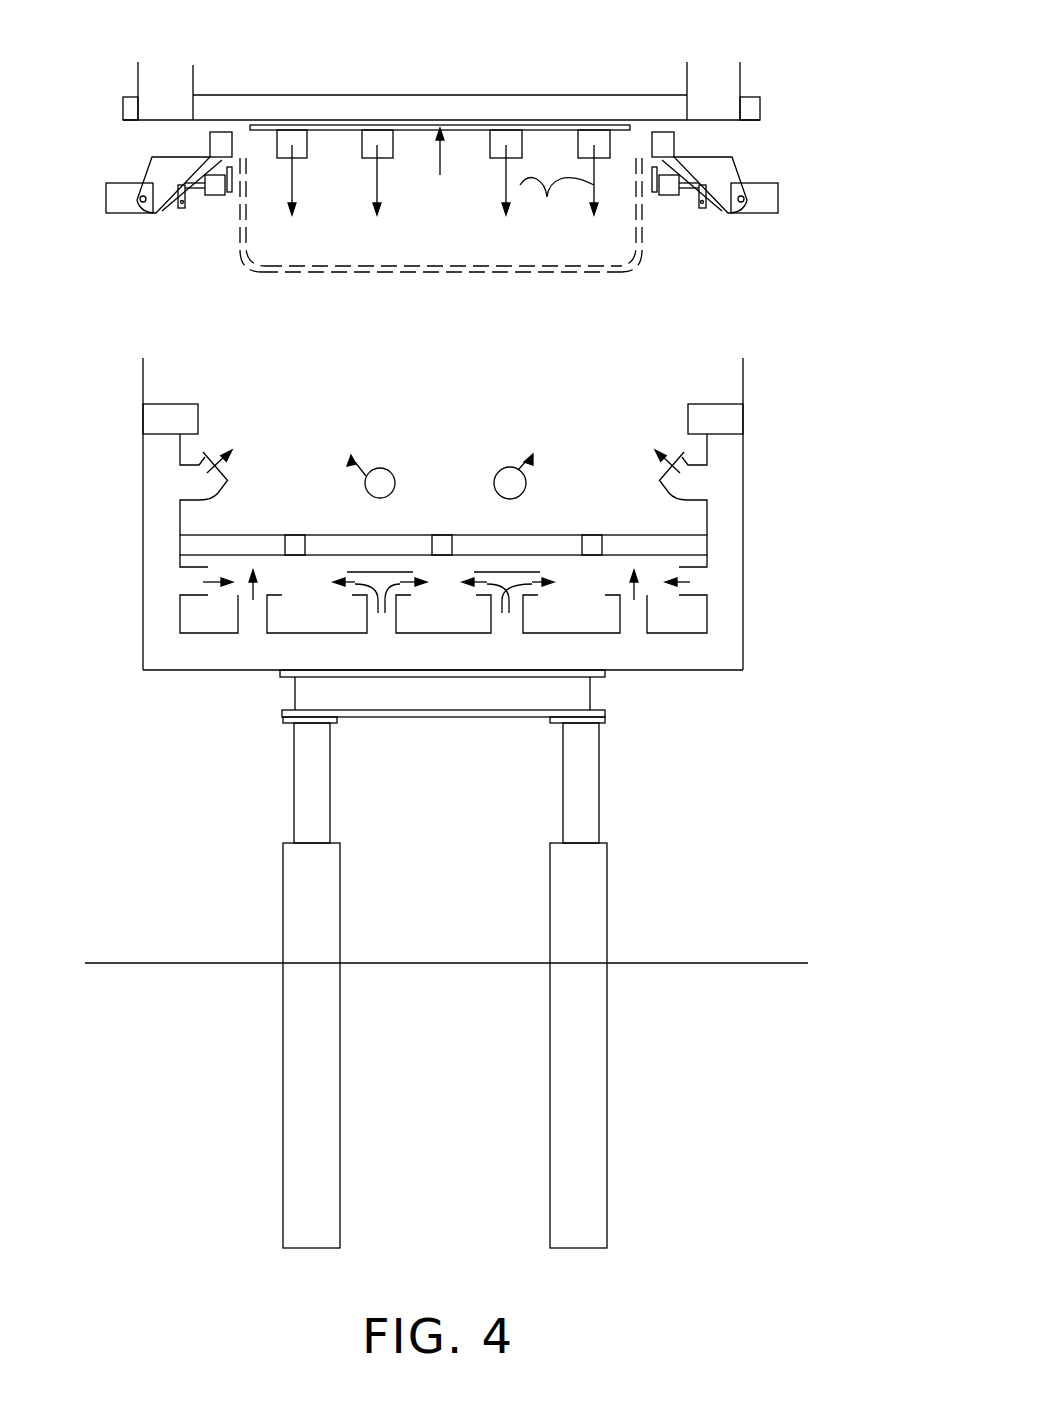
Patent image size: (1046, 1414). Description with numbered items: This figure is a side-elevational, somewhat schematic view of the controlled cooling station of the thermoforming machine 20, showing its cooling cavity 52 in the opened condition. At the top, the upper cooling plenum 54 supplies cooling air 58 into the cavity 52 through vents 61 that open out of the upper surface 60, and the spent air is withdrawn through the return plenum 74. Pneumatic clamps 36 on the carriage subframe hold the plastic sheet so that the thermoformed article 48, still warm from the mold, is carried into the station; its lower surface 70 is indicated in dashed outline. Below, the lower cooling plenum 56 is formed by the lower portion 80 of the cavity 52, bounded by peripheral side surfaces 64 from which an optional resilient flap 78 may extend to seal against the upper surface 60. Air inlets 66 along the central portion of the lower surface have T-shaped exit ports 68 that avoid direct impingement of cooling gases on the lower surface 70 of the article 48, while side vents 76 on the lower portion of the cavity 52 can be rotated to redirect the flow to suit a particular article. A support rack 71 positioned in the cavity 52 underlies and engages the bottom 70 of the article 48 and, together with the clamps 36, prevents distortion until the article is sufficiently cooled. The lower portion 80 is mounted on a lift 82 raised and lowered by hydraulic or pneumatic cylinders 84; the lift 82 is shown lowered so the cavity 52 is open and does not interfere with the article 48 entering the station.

The thermoforming machine 20 is at (459, 525).
The pneumatic clamps 36 is at (697, 205).
The thermoformed article 48 is at (584, 278).
The cooling cavity 52 is at (132, 567).
The upper cooling plenum 54 is at (548, 92).
The lower cooling plenum 56 is at (665, 673).
The cooling air 58 is at (630, 590).
The upper surface 60 is at (538, 124).
The vents 61 is at (277, 144).
The peripheral side surfaces 64 is at (142, 510).
The air inlets 66 is at (400, 612).
The T-shaped exit ports 68 is at (583, 638).
The article lower surface 70 is at (270, 280).
The support rack 71 is at (247, 533).
The return plenum 74 is at (191, 80).
The side vents 76 is at (228, 489).
The resilient flap 78 is at (142, 380).
The lower portion of the cavity 80 is at (142, 657).
The lift 82 is at (465, 718).
The hydraulic or pneumatic cylinders 84 is at (610, 882).